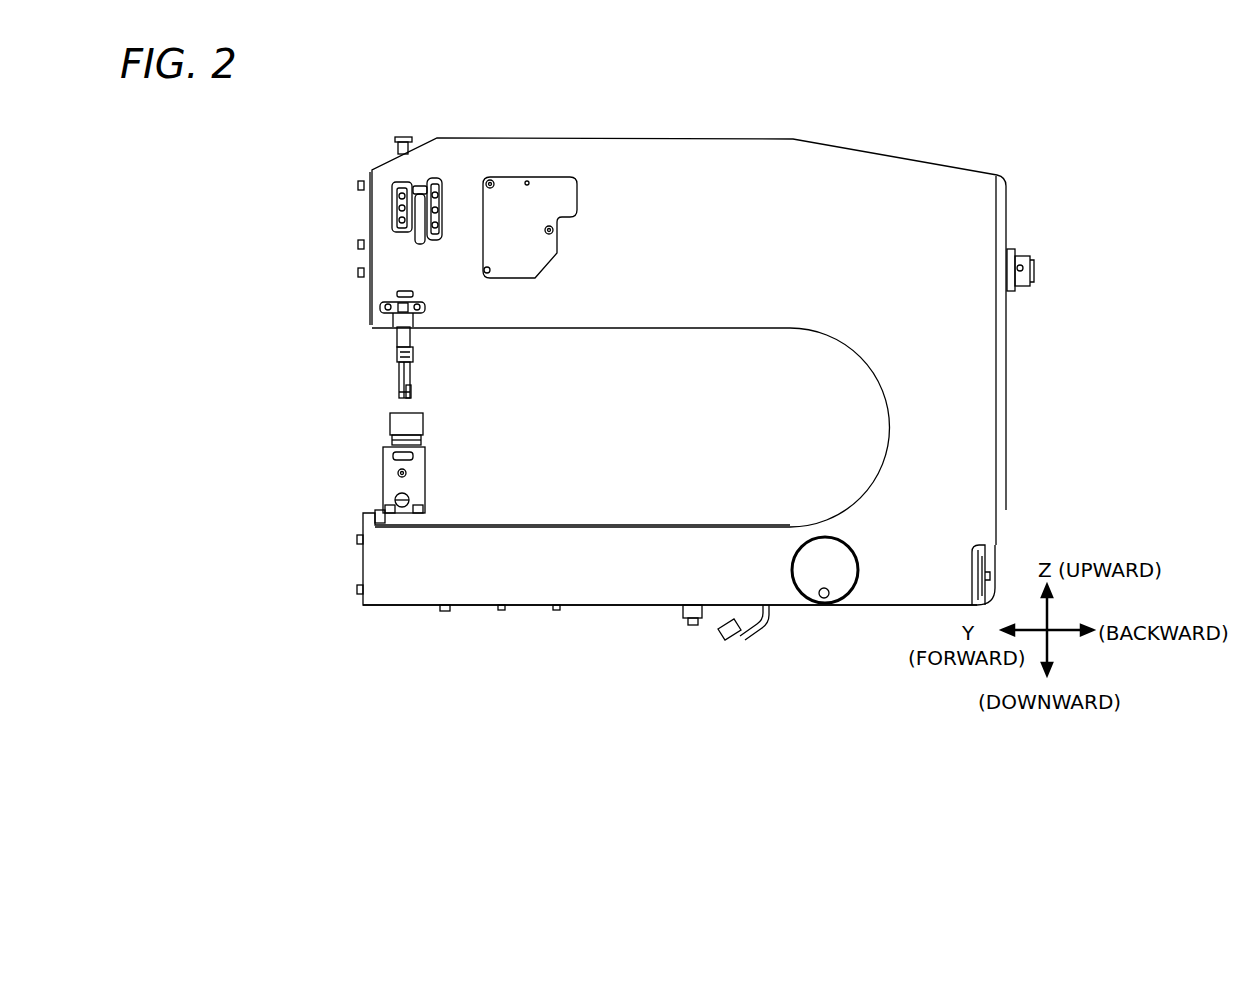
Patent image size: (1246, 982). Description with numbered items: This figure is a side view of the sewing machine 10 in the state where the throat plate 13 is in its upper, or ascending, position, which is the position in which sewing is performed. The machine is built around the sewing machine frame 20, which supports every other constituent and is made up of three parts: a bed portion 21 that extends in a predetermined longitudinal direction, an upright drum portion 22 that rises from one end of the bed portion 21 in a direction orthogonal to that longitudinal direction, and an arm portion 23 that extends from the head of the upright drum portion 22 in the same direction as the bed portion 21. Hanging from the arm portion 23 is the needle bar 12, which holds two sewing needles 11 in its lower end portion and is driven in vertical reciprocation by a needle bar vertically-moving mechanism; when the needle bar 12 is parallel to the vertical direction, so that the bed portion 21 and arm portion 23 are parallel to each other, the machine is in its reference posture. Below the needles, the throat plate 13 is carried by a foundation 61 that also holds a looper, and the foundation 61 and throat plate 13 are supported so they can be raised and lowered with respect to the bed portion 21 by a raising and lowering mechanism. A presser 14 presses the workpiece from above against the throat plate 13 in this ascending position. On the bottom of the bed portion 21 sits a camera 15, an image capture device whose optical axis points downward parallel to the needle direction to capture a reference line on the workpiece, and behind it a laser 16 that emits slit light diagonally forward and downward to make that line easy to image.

The sewing machine 10 is at (543, 637).
The sewing needle 11 is at (399, 381).
The needle bar 12 is at (400, 334).
The throat plate 13 is at (423, 415).
The presser 14 is at (410, 395).
The camera 15 is at (693, 625).
The laser 16 is at (718, 642).
The sewing machine frame 20 is at (695, 374).
The bed portion 21 is at (582, 498).
The upright drum portion 22 is at (897, 408).
The arm portion 23 is at (758, 320).
The foundation 61 is at (390, 502).